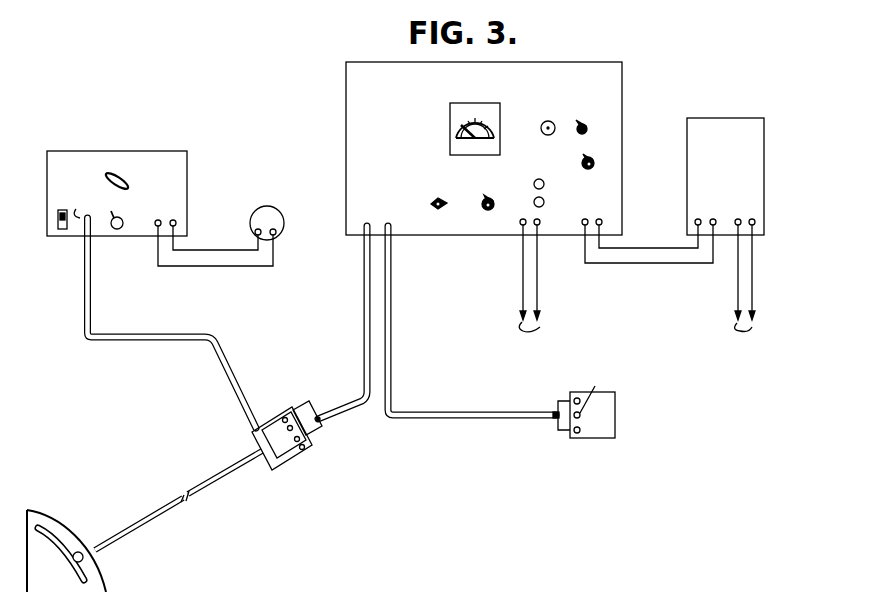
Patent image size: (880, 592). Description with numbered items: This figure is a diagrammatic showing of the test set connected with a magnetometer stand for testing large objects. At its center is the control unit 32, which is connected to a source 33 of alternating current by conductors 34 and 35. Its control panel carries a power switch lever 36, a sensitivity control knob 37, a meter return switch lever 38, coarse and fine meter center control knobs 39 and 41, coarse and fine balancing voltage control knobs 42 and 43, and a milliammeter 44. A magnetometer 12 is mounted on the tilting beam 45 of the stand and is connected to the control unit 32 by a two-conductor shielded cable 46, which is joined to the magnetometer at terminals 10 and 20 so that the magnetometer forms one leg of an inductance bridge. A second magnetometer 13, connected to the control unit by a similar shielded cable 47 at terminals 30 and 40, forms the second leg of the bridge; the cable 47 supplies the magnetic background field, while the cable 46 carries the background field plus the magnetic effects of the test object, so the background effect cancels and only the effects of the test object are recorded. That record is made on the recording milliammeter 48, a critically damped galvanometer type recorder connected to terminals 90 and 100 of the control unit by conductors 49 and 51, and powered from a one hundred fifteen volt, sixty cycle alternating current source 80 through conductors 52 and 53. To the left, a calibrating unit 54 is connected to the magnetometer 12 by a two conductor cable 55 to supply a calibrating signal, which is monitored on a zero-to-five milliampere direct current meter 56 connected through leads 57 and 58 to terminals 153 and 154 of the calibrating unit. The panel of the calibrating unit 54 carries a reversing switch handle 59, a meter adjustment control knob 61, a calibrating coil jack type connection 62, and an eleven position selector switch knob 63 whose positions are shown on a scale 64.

The terminal 10 is at (289, 413).
The magnetometer 12 is at (253, 436).
The magnetometer 13 is at (615, 412).
The terminal 20 is at (283, 421).
The terminal 30 is at (578, 398).
The control unit 32 is at (572, 62).
The source of alternating current 33 is at (540, 327).
The conductor 34 is at (520, 290).
The conductor 35 is at (539, 277).
The power switch lever 36 is at (583, 158).
The sensitivity control knob 37 is at (440, 197).
The meter return switch lever 38 is at (491, 198).
The coarse meter center control knob 39 is at (546, 170).
The terminal 40 is at (591, 395).
The fine meter center control knob 41 is at (544, 200).
The coarse balancing voltage control knob 42 is at (545, 121).
The fine balancing voltage control knob 43 is at (584, 121).
The milliammeter 44 is at (470, 103).
The tilting beam 45 is at (208, 489).
The shielded cable 46 is at (363, 318).
The shielded cable 47 is at (392, 320).
The recording milliammeter 48 is at (722, 118).
The conductor 49 is at (648, 248).
The conductor 51 is at (659, 263).
The conductor 52 is at (738, 290).
The conductor 53 is at (753, 272).
The calibrating unit 54 is at (137, 151).
The two conductor cable 55 is at (92, 275).
The direct current meter 56 is at (274, 208).
The lead 57 is at (197, 250).
The lead 58 is at (212, 266).
The reversing switch handle 59 is at (63, 232).
The meter adjustment control knob 61 is at (110, 231).
The calibrating coil jack type connection 62 is at (85, 207).
The selector switch knob 63 is at (105, 180).
The scale 64 is at (135, 172).
The source of alternating current 80 is at (752, 327).
The terminal 90 is at (582, 221).
The terminal 100 is at (603, 222).
The terminal 153 is at (161, 221).
The terminal 154 is at (176, 222).